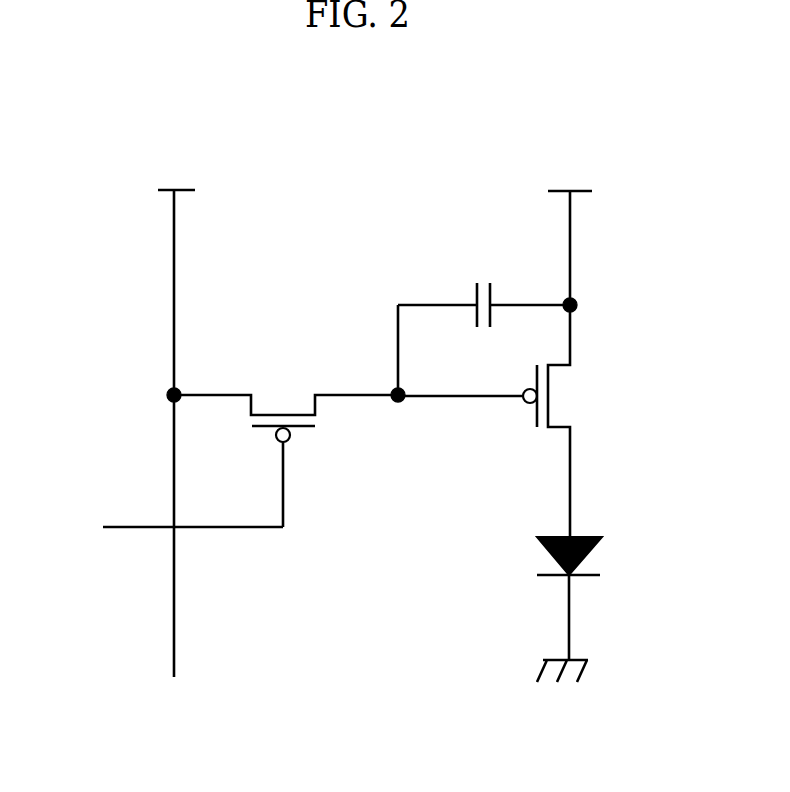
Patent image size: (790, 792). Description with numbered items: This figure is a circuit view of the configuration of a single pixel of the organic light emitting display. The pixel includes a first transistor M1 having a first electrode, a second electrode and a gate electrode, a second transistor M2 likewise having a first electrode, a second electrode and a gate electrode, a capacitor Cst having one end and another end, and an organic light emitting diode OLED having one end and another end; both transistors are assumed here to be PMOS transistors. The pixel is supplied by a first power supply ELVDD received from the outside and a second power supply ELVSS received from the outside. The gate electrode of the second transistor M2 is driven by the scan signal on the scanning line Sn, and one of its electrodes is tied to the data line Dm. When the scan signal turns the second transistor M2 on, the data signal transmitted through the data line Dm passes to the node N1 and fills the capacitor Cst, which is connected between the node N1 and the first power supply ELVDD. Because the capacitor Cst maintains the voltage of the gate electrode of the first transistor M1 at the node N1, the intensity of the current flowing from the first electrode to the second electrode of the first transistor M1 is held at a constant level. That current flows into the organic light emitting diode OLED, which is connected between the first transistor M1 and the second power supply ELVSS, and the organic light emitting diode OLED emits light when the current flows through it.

The data line Dm is at (177, 405).
The scanning line Sn is at (168, 526).
The second transistor M2 is at (286, 430).
The node N1 is at (454, 382).
The capacitor Cst is at (484, 274).
The first power supply ELVDD is at (572, 222).
The first transistor M1 is at (565, 421).
The organic light emitting diode OLED is at (613, 595).
The second power supply ELVSS is at (566, 701).